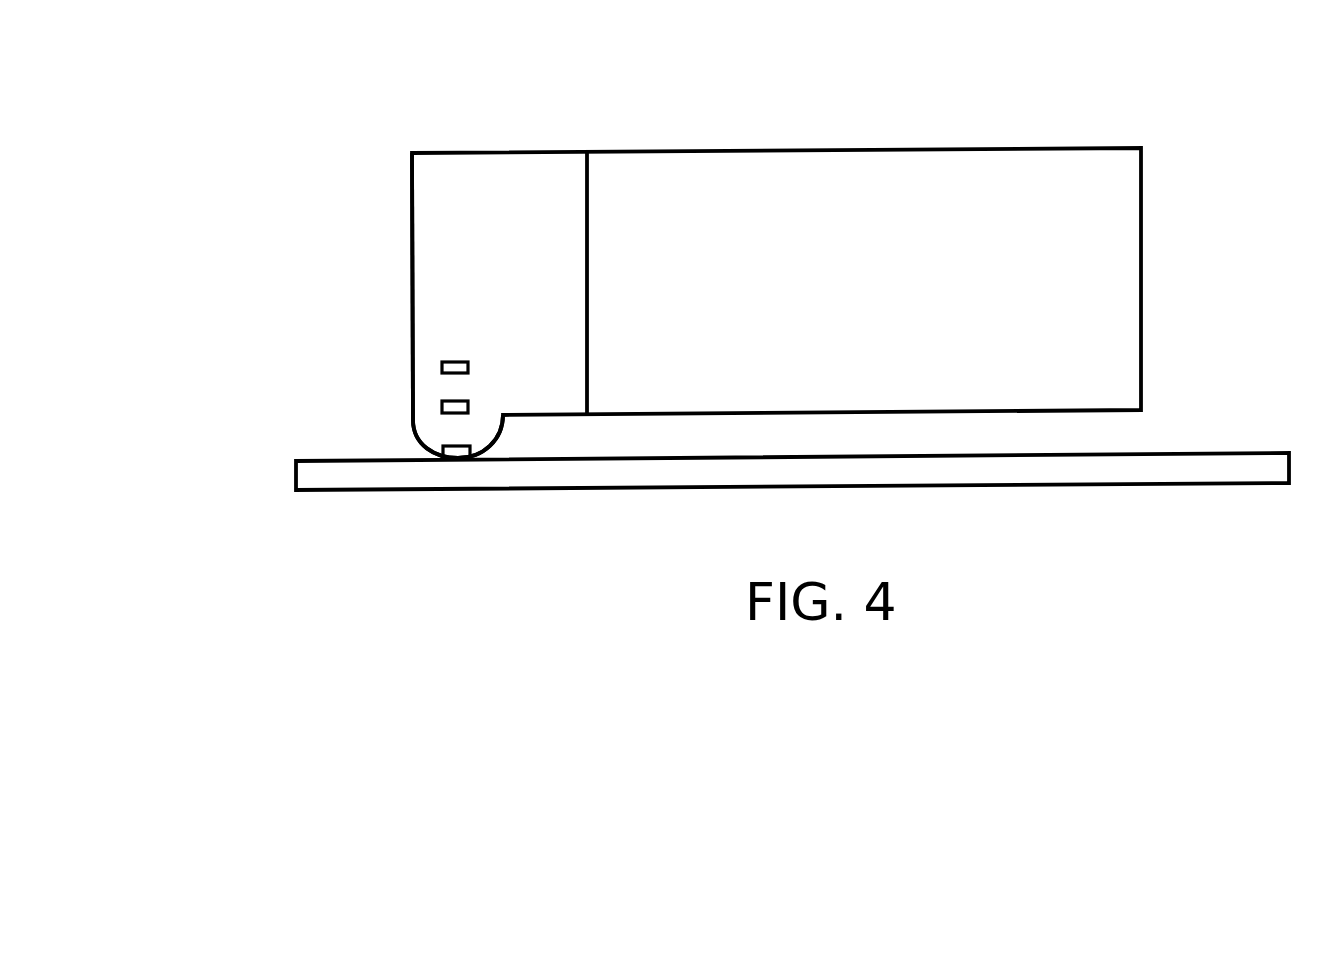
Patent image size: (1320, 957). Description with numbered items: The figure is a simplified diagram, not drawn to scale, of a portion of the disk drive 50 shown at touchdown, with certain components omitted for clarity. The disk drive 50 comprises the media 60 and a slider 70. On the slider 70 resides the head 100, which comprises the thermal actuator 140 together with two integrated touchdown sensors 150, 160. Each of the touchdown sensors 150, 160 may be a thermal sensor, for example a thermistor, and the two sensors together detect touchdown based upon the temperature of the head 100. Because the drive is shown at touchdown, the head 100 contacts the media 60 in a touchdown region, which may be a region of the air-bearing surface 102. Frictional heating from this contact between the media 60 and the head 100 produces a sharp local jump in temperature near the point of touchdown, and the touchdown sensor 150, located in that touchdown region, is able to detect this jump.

The disk drive 50 is at (842, 38).
The slider 70 is at (1062, 105).
The head 100 is at (412, 285).
The air-bearing surface 102 is at (413, 422).
The touchdown sensor 160 is at (444, 364).
The thermal actuator 140 is at (444, 404).
The touchdown sensor 150 is at (461, 458).
The media 60 is at (1170, 453).